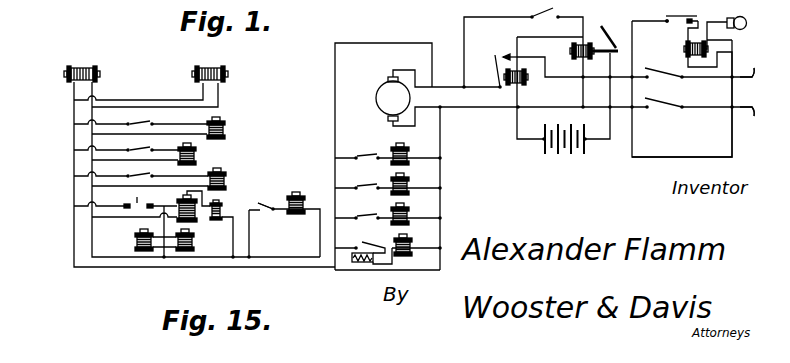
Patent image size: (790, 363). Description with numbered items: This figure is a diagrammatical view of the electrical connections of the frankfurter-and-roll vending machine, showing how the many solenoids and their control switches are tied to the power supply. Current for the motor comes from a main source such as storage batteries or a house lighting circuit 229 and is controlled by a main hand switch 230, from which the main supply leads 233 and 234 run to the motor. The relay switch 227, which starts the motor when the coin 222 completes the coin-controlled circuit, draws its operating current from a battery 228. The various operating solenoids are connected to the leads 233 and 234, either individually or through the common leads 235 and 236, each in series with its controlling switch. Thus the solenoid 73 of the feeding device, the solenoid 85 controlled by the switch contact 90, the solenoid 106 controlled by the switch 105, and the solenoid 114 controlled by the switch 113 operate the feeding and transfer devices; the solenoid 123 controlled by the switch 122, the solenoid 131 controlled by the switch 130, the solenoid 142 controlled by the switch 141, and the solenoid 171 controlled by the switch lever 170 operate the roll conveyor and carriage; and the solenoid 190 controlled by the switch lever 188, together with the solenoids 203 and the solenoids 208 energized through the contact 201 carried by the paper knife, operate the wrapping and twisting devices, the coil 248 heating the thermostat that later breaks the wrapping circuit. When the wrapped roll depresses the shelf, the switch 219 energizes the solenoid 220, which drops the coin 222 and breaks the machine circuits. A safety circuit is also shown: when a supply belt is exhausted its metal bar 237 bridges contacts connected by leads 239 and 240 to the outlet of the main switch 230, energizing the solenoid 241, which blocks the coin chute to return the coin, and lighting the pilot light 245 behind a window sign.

The solenoid 73 is at (81, 64).
The solenoid 85 is at (226, 128).
The switch contact 90 is at (129, 124).
The switch 105 is at (129, 150).
The solenoid 106 is at (197, 157).
The switch 113 is at (129, 176).
The solenoid 114 is at (227, 185).
The switch 122 is at (262, 201).
The solenoid 123 is at (306, 201).
The switch 130 is at (358, 156).
The solenoid 131 is at (407, 153).
The switch 141 is at (357, 188).
The solenoid 142 is at (407, 185).
The switch lever 170 is at (356, 218).
The solenoid 171 is at (407, 215).
The switch lever 188 is at (363, 243).
The solenoid 190 is at (411, 244).
The contact 201 is at (147, 203).
The solenoids 203 is at (193, 222).
The solenoids 208 is at (134, 245).
The switch 219 is at (555, 16).
The solenoid 220 is at (578, 60).
The coin 222 is at (611, 22).
The relay switch 227 is at (498, 54).
The battery 228 is at (557, 155).
The house lighting circuit 229 is at (751, 79).
The main hand switch 230 is at (670, 78).
The lead 233 is at (493, 85).
The lead 234 is at (481, 110).
The lead 235 is at (335, 109).
The lead 236 is at (441, 172).
The metal bar 237 is at (690, 17).
The lead 239 is at (651, 15).
The lead 240 is at (733, 59).
The solenoid 241 is at (687, 52).
The pilot light 245 is at (748, 14).
The coil 248 is at (367, 264).